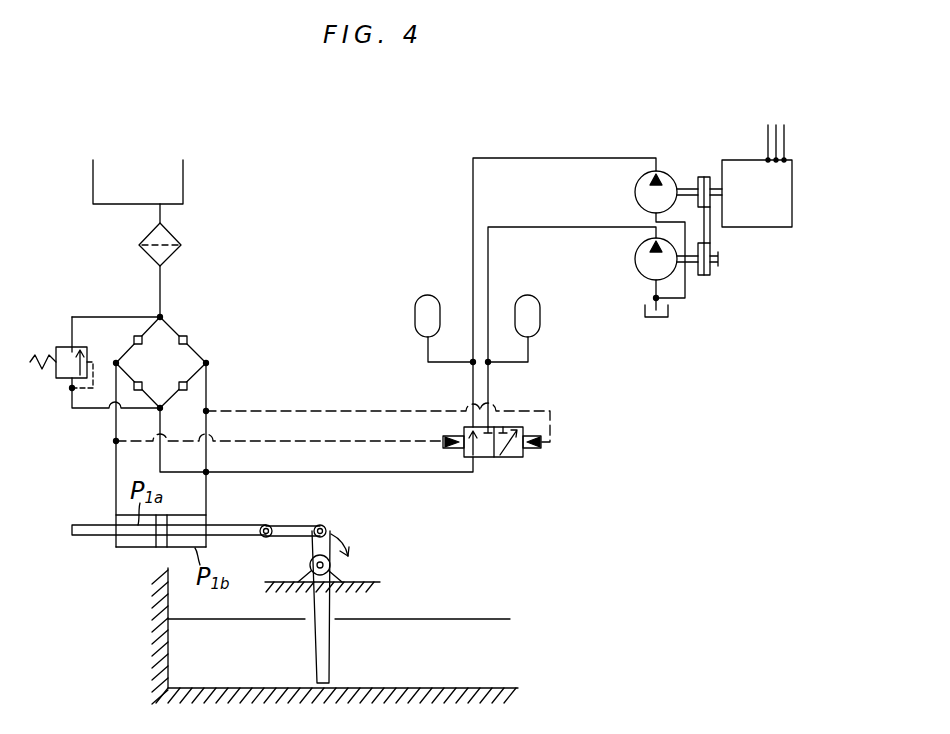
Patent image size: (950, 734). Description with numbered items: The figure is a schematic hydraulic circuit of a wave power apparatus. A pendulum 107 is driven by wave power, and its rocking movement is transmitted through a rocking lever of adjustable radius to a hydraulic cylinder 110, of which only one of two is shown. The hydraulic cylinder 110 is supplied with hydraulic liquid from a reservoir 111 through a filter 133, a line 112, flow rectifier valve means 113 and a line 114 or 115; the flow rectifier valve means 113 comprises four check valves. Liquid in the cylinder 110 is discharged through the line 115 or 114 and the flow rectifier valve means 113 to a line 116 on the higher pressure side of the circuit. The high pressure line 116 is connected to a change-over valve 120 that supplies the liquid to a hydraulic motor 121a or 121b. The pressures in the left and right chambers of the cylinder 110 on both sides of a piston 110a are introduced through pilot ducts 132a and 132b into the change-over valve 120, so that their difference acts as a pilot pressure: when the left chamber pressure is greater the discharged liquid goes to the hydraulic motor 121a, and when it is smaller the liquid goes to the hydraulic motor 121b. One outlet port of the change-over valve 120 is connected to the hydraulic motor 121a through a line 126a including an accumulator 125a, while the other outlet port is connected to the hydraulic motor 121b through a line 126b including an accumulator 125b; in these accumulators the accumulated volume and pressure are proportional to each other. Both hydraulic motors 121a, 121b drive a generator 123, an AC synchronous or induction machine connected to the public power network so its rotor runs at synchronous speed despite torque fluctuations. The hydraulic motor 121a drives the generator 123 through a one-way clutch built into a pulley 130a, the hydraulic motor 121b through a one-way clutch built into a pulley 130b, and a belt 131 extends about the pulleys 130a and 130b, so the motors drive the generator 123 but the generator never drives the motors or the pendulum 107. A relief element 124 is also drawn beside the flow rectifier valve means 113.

The pendulum 107 is at (330, 648).
The hydraulic cylinder 110 is at (132, 548).
The piston 110a is at (158, 548).
The reservoir 111 is at (183, 186).
The line 112 is at (162, 280).
The flow rectifier valve means 113 is at (175, 321).
The line 114 is at (116, 478).
The line 115 is at (228, 490).
The high pressure line 116 is at (378, 473).
The change-over valve 120 is at (508, 458).
The hydraulic motor 121a is at (656, 172).
The hydraulic motor 121b is at (667, 285).
The generator 123 is at (792, 220).
The relief valve 124 is at (60, 346).
The accumulator 125a is at (418, 308).
The accumulator 125b is at (540, 322).
The line 126a is at (473, 192).
The line 126b is at (530, 227).
The pulley 130a is at (706, 177).
The pulley 130b is at (712, 275).
The belt 131 is at (712, 235).
The pilot duct 132a is at (310, 444).
The pilot duct 132b is at (330, 411).
The filter 133 is at (178, 240).